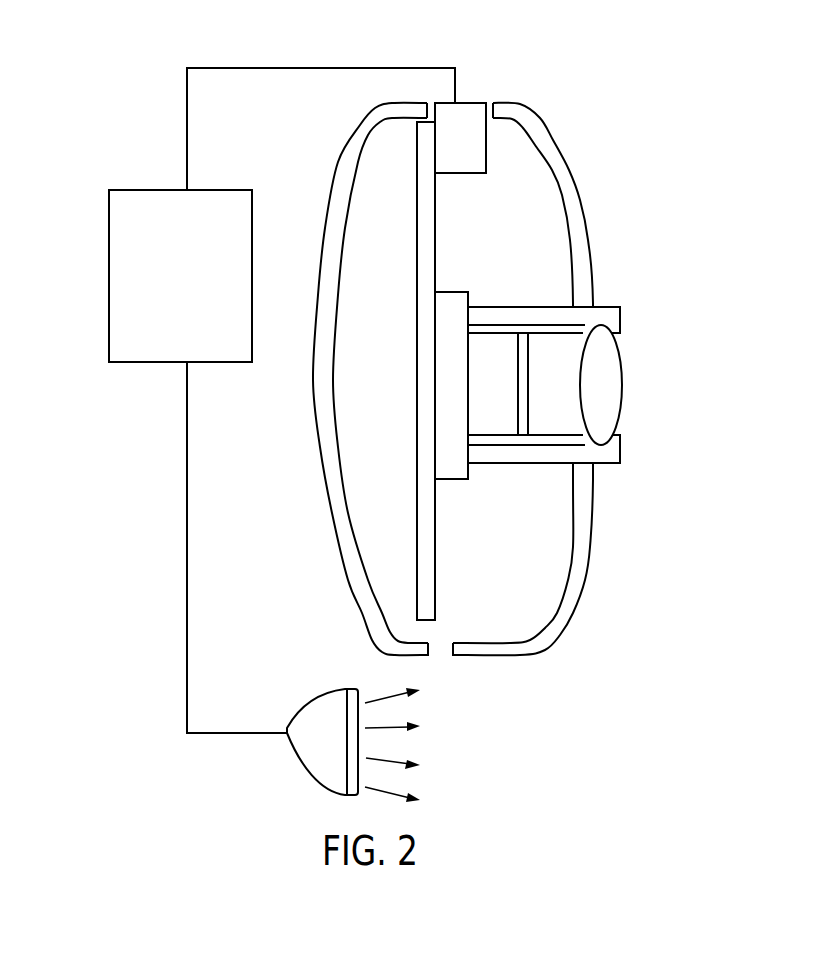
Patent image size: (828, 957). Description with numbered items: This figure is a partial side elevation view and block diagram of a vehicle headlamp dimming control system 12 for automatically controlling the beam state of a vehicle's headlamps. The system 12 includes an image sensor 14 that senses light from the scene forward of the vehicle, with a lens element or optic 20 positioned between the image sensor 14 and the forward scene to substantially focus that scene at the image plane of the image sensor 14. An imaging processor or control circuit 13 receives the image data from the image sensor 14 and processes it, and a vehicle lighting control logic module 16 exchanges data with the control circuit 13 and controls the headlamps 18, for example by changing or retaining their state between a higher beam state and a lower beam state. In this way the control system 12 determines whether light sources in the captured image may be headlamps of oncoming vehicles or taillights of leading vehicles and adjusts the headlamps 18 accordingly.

The vehicle headlamp dimming control system 12 is at (98, 98).
The control circuit 13 is at (472, 103).
The image sensor 14 is at (453, 292).
The vehicle lighting control logic module 16 is at (155, 362).
The headlamps 18 is at (312, 699).
The lens element or optic 20 is at (623, 385).